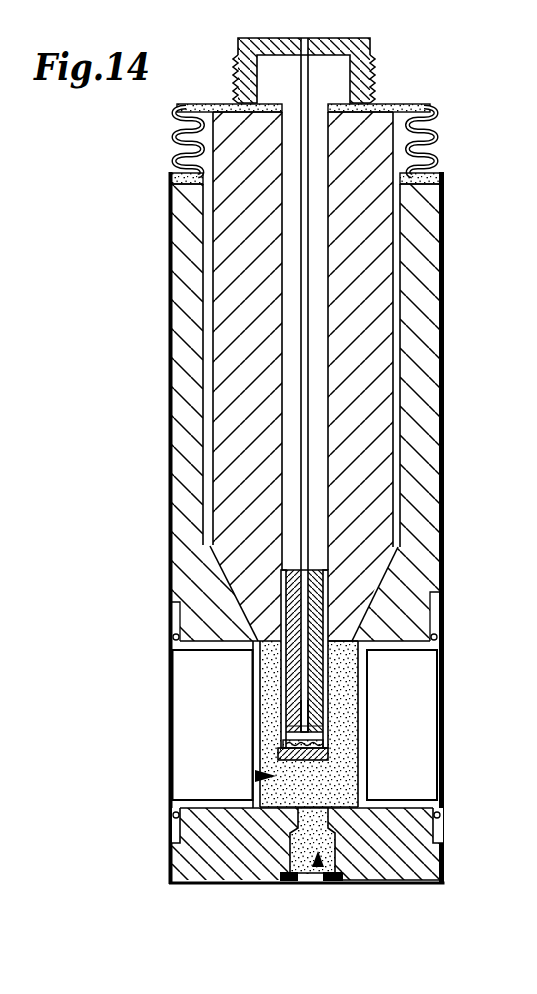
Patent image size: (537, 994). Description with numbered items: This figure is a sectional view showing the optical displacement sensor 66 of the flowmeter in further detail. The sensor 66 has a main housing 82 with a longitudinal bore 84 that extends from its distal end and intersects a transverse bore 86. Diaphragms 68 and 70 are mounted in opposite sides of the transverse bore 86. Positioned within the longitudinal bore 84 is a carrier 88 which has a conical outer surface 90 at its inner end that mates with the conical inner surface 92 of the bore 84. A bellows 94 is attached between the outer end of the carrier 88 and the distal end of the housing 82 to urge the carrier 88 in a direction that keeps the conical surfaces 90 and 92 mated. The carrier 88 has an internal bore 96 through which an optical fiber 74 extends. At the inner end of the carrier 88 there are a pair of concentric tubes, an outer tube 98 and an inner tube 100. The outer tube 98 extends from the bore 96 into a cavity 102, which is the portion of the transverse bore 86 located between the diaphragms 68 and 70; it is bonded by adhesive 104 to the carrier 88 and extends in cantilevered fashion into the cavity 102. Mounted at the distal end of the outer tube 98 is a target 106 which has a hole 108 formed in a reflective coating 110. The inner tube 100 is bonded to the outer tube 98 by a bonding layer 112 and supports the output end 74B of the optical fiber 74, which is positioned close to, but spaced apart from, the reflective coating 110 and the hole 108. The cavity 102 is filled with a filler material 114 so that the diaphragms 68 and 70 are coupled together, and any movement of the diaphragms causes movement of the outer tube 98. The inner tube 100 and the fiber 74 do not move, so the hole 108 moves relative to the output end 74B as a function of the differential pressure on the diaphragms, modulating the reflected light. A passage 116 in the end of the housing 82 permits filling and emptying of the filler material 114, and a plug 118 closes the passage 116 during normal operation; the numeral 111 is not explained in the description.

The optical displacement sensor 66 is at (147, 439).
The diaphragm 68 is at (300, 722).
The diaphragm 70 is at (362, 740).
The optical fiber 74 is at (303, 235).
The output end of optical fiber 74B is at (312, 713).
The main housing 82 is at (412, 545).
The longitudinal bore 84 is at (398, 318).
The transverse bore 86 is at (149, 673).
The carrier 88 is at (357, 247).
The conical outer surface 90 is at (380, 625).
The conical inner surface 92 is at (262, 645).
The bellows 94 is at (420, 125).
The internal bore 96 is at (285, 327).
The outer tube 98 is at (330, 645).
The inner tube 100 is at (282, 745).
The cavity 102 is at (288, 797).
The adhesive 104 is at (282, 622).
The target 106 is at (325, 755).
The hole 108 is at (256, 775).
The reflective coating 110 is at (322, 745).
The bottom wall 111 is at (365, 884).
The bonding layer 112 is at (237, 600).
The filler material 114 is at (292, 787).
The passage 116 is at (323, 883).
The plug 118 is at (298, 883).